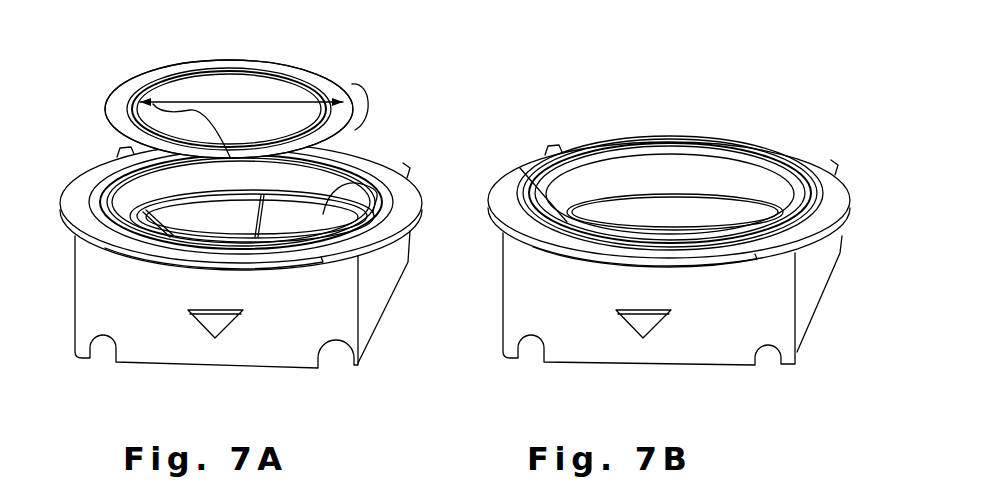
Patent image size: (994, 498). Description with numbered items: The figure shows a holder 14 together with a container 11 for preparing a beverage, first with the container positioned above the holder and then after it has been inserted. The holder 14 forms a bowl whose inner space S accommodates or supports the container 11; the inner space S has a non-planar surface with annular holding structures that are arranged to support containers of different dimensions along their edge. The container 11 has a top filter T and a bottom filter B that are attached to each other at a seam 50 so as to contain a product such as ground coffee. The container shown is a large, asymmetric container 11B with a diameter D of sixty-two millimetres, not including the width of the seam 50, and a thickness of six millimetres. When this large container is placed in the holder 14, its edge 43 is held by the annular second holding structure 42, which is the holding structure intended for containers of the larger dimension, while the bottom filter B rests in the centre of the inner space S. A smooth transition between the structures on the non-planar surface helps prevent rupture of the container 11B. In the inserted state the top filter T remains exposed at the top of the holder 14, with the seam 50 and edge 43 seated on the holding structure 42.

In FIG. 7A, the container 11 is at (239, 88).
In FIG. 7B, the container with large dimensions 11B is at (683, 205).
In FIG. 7A, the holder 14 is at (63, 322).
In FIG. 7B, the holder 14 is at (482, 298).
In FIG. 7A, the second holding structure 42 is at (372, 191).
In FIG. 7A, the edge 43 is at (358, 86).
In FIG. 7A, the seam 50 is at (350, 112).
In FIG. 7B, the seam 50 is at (522, 170).
In FIG. 7A, the top filter T is at (213, 87).
In FIG. 7B, the top filter T is at (630, 210).
In FIG. 7A, the bottom filter B is at (145, 98).
In FIG. 7A, the diameter D is at (295, 102).
In FIG. 7A, the inner space S is at (158, 190).